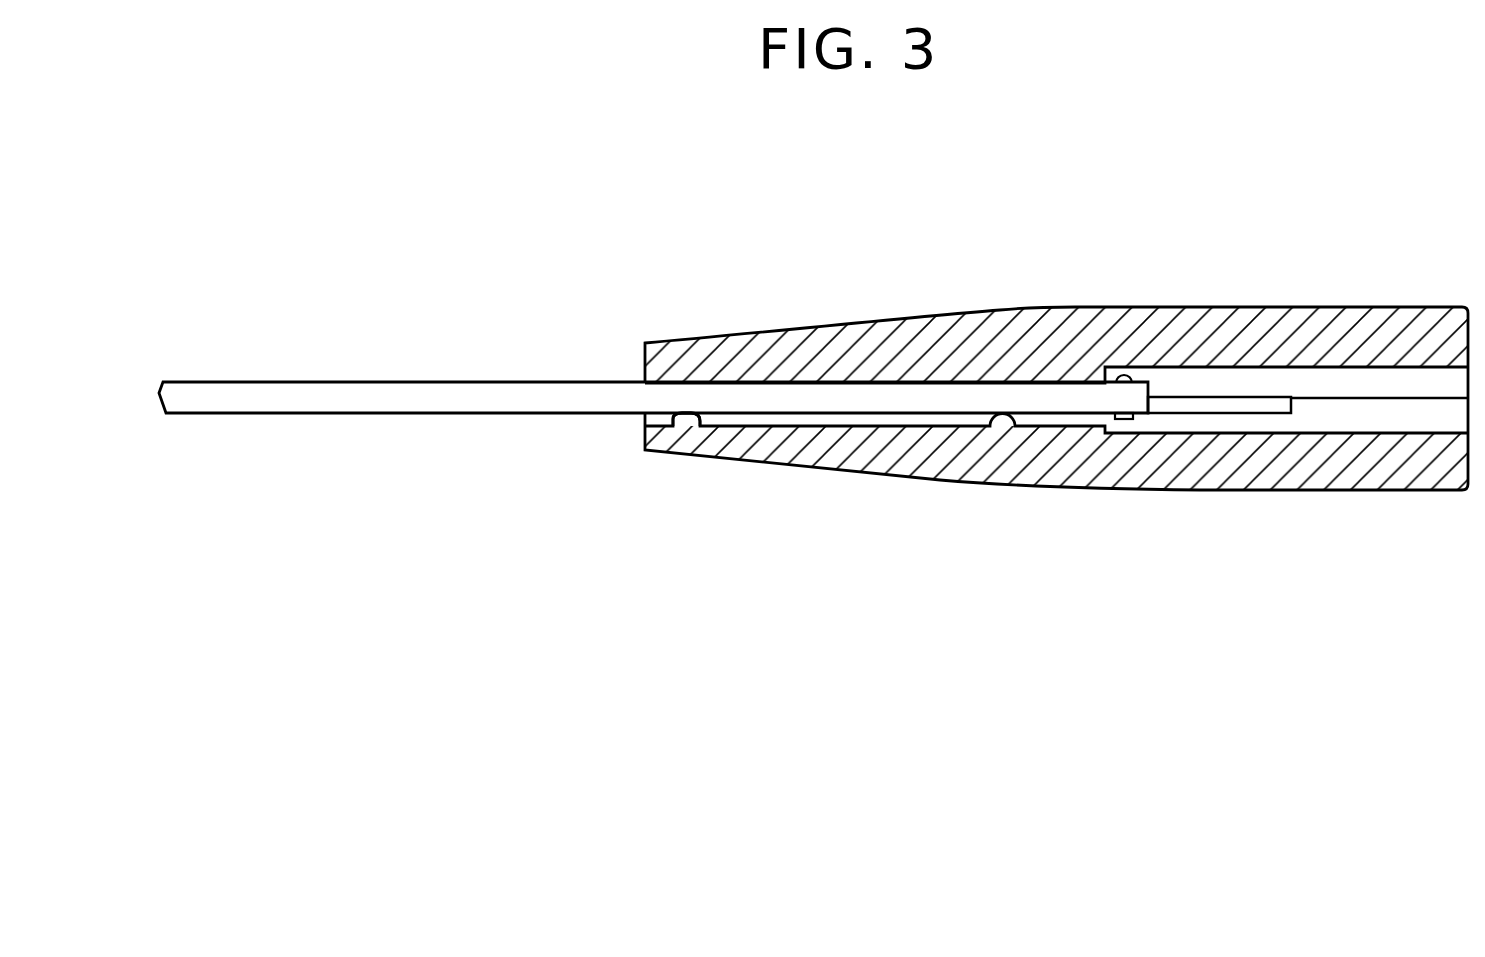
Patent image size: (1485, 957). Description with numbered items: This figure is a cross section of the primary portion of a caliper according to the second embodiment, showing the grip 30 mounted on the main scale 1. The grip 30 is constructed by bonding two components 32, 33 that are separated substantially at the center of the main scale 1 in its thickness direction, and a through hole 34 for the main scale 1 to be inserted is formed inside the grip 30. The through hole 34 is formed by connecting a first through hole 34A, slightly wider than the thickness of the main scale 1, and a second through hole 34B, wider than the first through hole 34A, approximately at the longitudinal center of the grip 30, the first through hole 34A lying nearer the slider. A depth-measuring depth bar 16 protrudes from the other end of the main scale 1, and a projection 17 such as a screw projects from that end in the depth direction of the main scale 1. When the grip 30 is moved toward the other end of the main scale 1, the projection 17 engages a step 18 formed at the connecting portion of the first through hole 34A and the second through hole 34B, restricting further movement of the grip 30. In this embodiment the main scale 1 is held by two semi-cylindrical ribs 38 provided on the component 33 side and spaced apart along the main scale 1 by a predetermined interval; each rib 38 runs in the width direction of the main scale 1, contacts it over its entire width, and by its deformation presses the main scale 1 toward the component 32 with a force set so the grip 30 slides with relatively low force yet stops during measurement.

The main scale 1 is at (350, 395).
The depth bar 16 is at (1188, 405).
The projection 17 is at (1130, 372).
The step 18 is at (1116, 375).
The grip 30 is at (885, 274).
The component 32 is at (1432, 323).
The component 33 is at (1402, 483).
The through hole 34 is at (1358, 388).
The first through hole 34A is at (862, 418).
The second through hole 34B is at (1335, 415).
The semi-cylindrical rib 38 is at (673, 421).